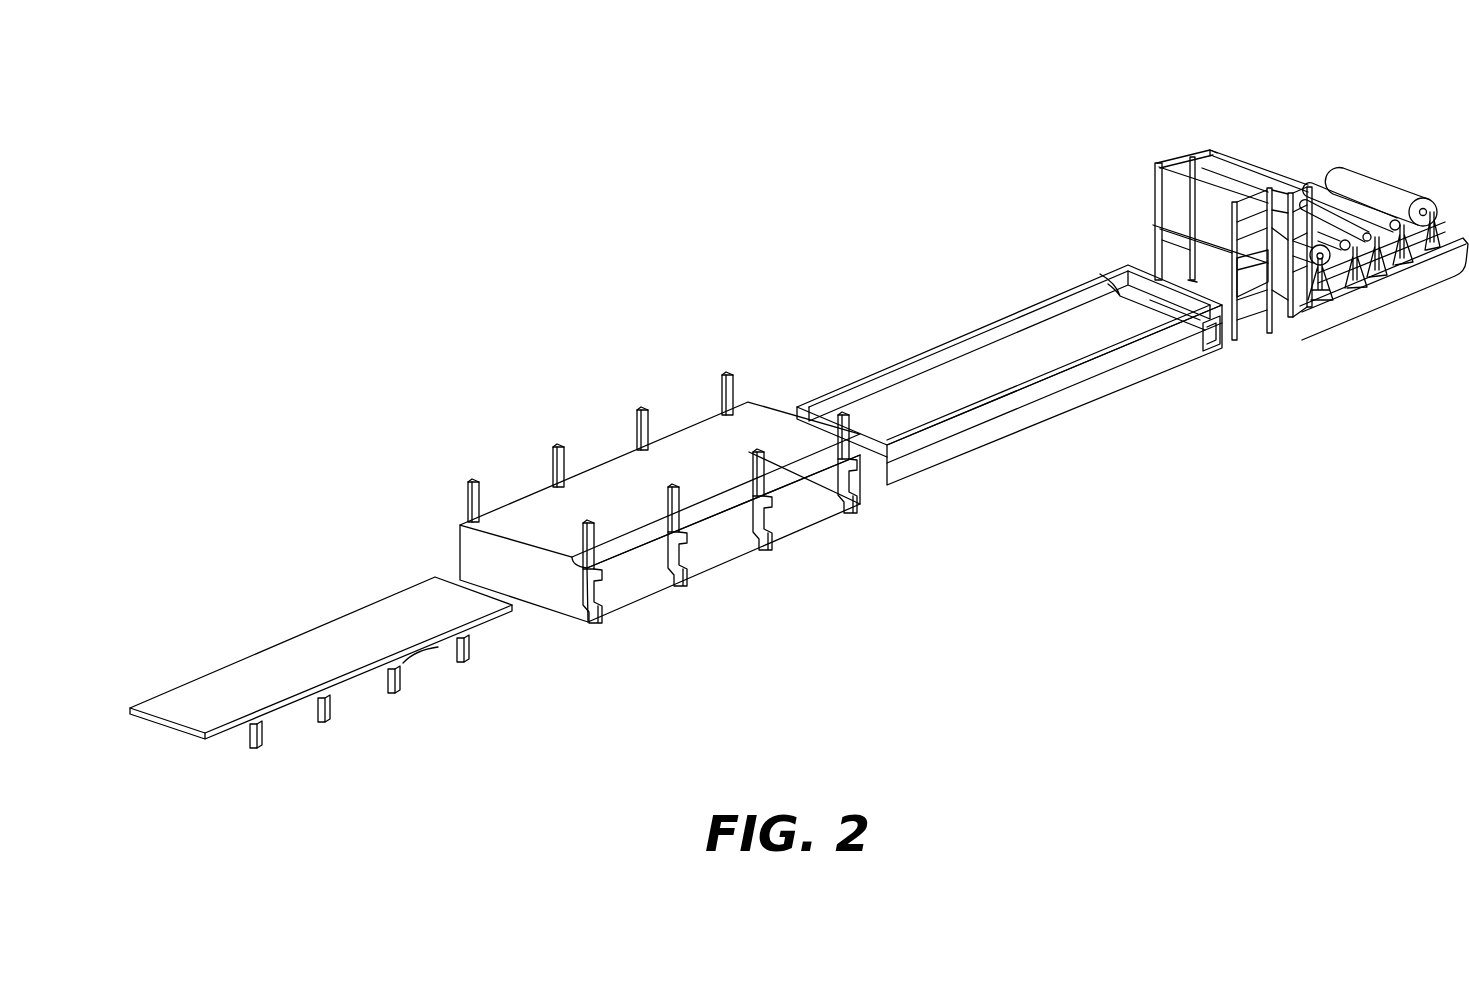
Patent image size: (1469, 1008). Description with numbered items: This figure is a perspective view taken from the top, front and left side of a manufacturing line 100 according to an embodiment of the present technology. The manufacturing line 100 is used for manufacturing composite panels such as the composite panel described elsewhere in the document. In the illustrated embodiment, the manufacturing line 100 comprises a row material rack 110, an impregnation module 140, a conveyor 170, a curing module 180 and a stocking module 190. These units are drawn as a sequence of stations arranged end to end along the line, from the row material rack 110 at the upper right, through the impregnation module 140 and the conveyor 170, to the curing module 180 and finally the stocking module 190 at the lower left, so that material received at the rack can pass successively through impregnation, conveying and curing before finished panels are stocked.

The manufacturing line 100 is at (721, 180).
The row material rack 110 is at (1277, 345).
The impregnation module 140 is at (1235, 113).
The conveyor 170 is at (862, 540).
The curing module 180 is at (548, 657).
The stocking module 190 is at (423, 525).